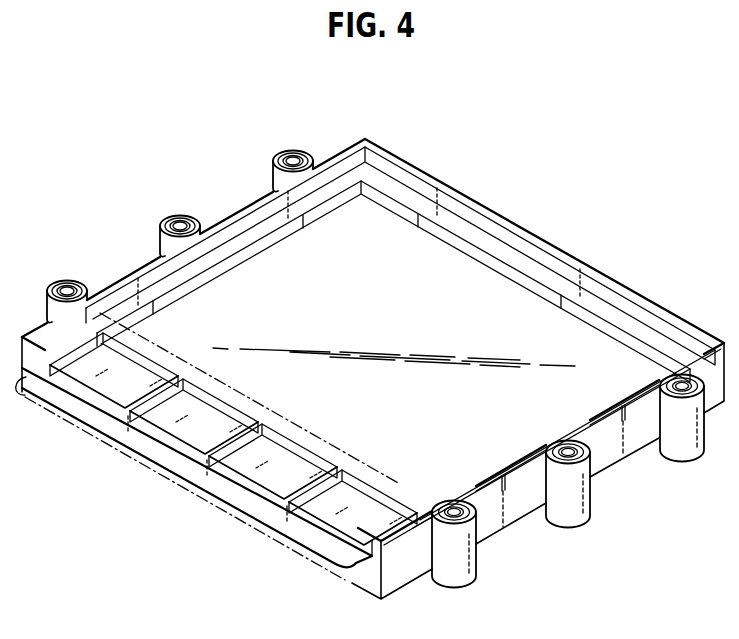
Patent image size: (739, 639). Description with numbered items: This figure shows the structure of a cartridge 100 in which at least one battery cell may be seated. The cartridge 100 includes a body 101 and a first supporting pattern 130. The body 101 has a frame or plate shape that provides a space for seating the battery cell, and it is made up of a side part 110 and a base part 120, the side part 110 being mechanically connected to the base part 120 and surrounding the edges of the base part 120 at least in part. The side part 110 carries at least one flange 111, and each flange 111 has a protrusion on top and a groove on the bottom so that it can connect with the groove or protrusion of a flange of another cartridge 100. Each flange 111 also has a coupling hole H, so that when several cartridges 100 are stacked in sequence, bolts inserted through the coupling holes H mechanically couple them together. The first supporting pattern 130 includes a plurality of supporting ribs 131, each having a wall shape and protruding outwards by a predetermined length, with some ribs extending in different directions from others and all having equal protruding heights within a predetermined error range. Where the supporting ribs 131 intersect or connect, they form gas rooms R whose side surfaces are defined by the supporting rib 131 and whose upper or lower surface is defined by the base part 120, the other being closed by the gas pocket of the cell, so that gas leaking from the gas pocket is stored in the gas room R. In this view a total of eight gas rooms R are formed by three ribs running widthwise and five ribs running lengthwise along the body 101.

The cartridge 100 is at (163, 164).
The body 101 is at (513, 152).
The side part 110 is at (588, 265).
The flange 111 is at (470, 563).
The coupling hole H is at (460, 508).
The base part 120 is at (422, 313).
The first supporting pattern 130 is at (97, 435).
The supporting rib 131 is at (210, 428).
The gas room R is at (272, 486).